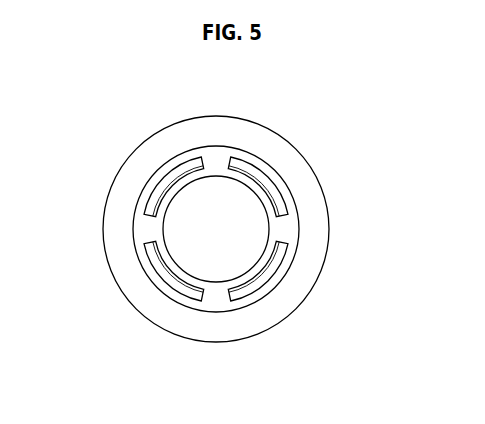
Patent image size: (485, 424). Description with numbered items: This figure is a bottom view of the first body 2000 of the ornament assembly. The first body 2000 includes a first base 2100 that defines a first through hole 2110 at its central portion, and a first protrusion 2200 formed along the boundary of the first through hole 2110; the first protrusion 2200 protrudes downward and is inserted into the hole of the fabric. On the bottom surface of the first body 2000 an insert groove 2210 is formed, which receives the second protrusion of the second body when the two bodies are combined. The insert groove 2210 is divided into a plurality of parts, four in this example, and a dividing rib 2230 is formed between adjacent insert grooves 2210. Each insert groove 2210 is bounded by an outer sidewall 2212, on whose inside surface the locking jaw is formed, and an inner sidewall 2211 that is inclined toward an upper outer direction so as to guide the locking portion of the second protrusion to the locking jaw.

The first body 2000 is at (296, 124).
The first base 2100 is at (315, 186).
The first through hole 2110 is at (221, 224).
The first protrusion 2200 is at (133, 266).
The dividing rib 2230 is at (287, 226).
The insert groove 2210 is at (290, 250).
The inner sidewall 2211 is at (272, 258).
The outer sidewall 2212 is at (249, 298).